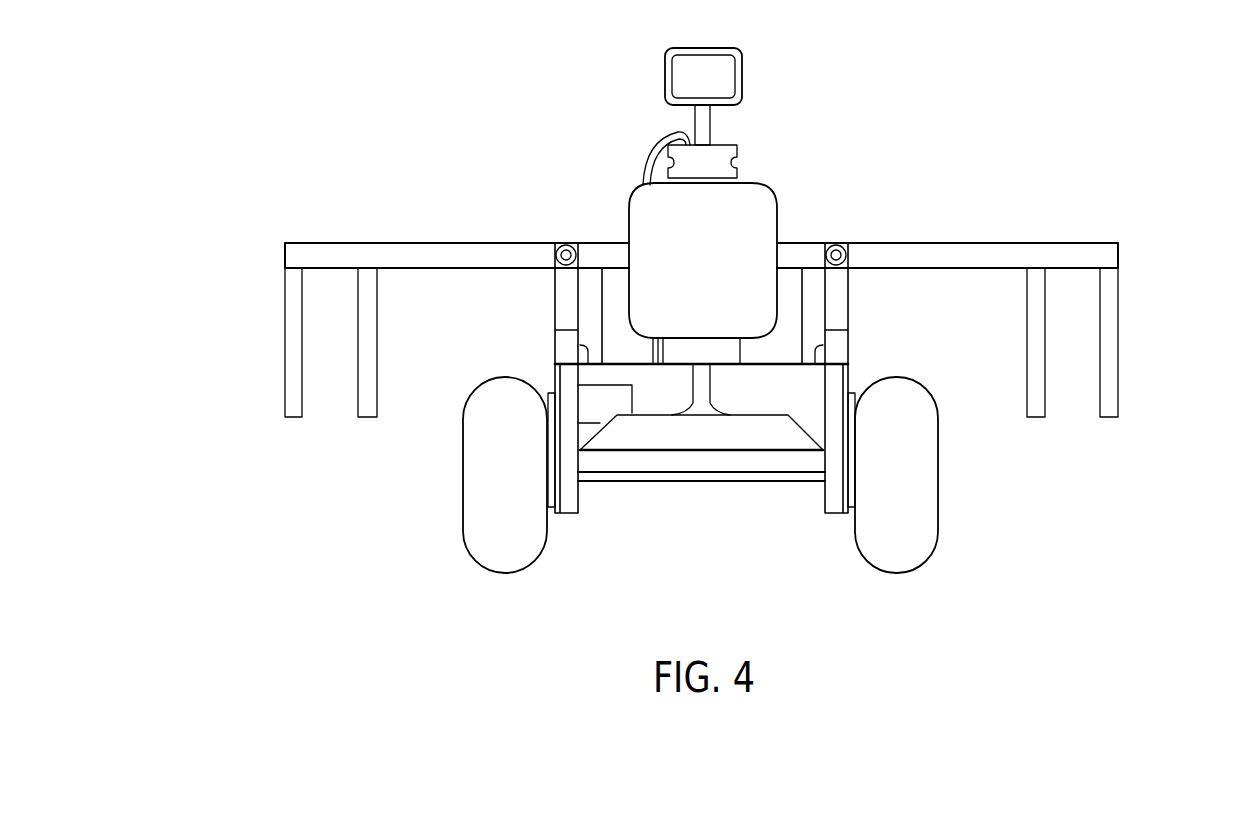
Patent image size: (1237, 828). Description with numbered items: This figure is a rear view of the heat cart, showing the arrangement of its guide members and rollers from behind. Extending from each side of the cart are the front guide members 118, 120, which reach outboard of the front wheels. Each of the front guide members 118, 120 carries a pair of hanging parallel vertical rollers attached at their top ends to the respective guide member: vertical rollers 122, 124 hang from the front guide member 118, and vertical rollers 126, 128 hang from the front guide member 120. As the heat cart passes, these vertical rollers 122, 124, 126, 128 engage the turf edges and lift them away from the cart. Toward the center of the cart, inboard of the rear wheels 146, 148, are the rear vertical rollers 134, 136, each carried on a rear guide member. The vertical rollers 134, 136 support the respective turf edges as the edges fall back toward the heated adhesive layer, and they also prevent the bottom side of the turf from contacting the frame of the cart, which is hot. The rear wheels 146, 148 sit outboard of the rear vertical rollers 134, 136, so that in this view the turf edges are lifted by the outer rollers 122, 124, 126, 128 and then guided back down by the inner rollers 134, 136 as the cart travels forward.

The front guide member 118 is at (308, 238).
The front guide member 120 is at (1042, 227).
The vertical roller 122 is at (282, 377).
The vertical roller 124 is at (355, 403).
The vertical roller 126 is at (1120, 307).
The vertical roller 128 is at (1047, 403).
The vertical roller 134 is at (837, 490).
The vertical roller 136 is at (567, 490).
The rear wheel 146 is at (923, 525).
The rear wheel 148 is at (480, 507).